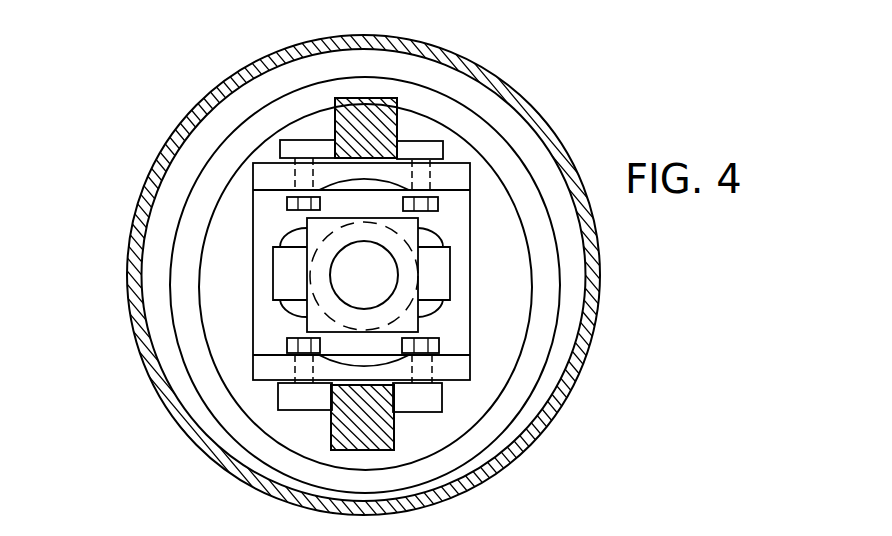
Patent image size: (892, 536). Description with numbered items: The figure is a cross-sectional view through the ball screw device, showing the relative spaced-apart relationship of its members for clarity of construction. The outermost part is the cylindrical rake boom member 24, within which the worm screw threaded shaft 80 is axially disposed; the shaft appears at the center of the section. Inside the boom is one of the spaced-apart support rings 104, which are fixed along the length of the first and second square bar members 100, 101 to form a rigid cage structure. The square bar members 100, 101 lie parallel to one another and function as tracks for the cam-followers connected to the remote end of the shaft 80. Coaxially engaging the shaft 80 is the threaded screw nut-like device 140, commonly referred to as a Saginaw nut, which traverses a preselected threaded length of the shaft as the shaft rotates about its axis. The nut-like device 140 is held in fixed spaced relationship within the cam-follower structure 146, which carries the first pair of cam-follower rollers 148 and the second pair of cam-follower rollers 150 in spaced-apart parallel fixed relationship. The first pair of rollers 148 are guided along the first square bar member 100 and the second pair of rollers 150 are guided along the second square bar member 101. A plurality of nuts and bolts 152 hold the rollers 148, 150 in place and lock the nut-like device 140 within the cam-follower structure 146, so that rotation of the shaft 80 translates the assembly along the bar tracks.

The cylindrical rake boom member 24 is at (422, 63).
The worm screw threaded shaft 80 is at (387, 285).
The first square bar member 100 is at (362, 290).
The second square bar member 101 is at (383, 125).
The support ring 104 is at (473, 137).
The threaded screw nut-like device 140 is at (429, 224).
The cam-follower structure 146 is at (253, 278).
The first pair of cam-follower rollers 148 is at (292, 391).
The second pair of cam-follower rollers 150 is at (292, 147).
The nuts and bolts 152 is at (437, 346).